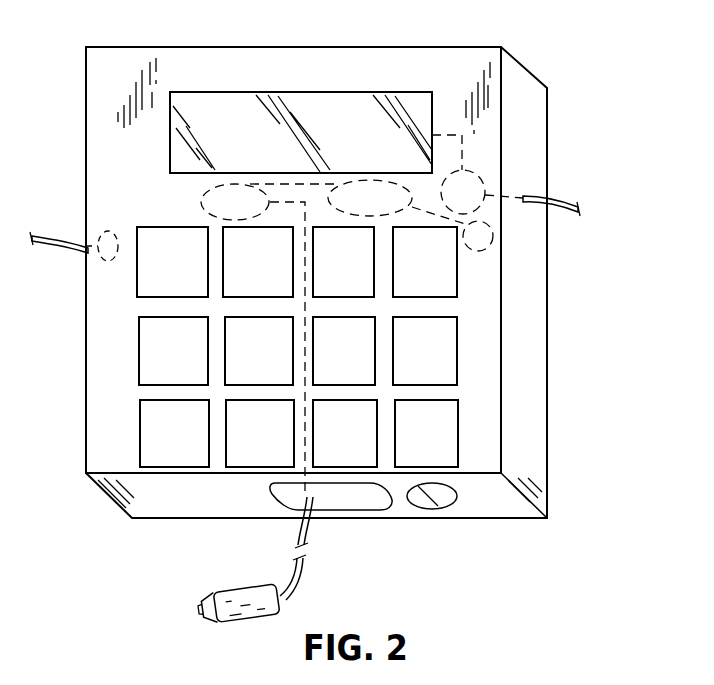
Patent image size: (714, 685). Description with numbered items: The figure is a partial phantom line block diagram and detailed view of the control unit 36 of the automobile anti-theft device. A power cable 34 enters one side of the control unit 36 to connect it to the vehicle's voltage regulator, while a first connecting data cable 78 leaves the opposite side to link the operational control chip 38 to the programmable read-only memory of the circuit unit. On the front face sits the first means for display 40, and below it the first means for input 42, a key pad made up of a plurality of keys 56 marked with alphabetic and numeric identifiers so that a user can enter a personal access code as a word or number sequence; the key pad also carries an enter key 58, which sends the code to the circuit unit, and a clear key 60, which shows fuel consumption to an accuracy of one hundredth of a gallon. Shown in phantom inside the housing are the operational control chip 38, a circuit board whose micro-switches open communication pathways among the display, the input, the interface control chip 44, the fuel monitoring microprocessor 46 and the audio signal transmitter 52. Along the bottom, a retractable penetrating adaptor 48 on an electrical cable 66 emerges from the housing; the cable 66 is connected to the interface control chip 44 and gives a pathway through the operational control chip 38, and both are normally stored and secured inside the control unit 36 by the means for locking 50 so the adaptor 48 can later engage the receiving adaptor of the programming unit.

The power cable 34 is at (55, 252).
The control unit 36 is at (578, 116).
The operational control chip 38 is at (392, 178).
The first means for display 40 is at (205, 105).
The first means for input 42 is at (372, 282).
The interface control chip 44 is at (205, 210).
The fuel monitoring microprocessor 46 is at (487, 182).
The retractable penetrating adaptor 48 is at (240, 602).
The means for locking 50 is at (442, 500).
The audio signal transmitter 52 is at (493, 242).
The keys 56 is at (447, 363).
The enter key 58 is at (450, 430).
The clear key 60 is at (368, 484).
The electrical cable 66 is at (310, 528).
The first connecting data cable 78 is at (556, 205).